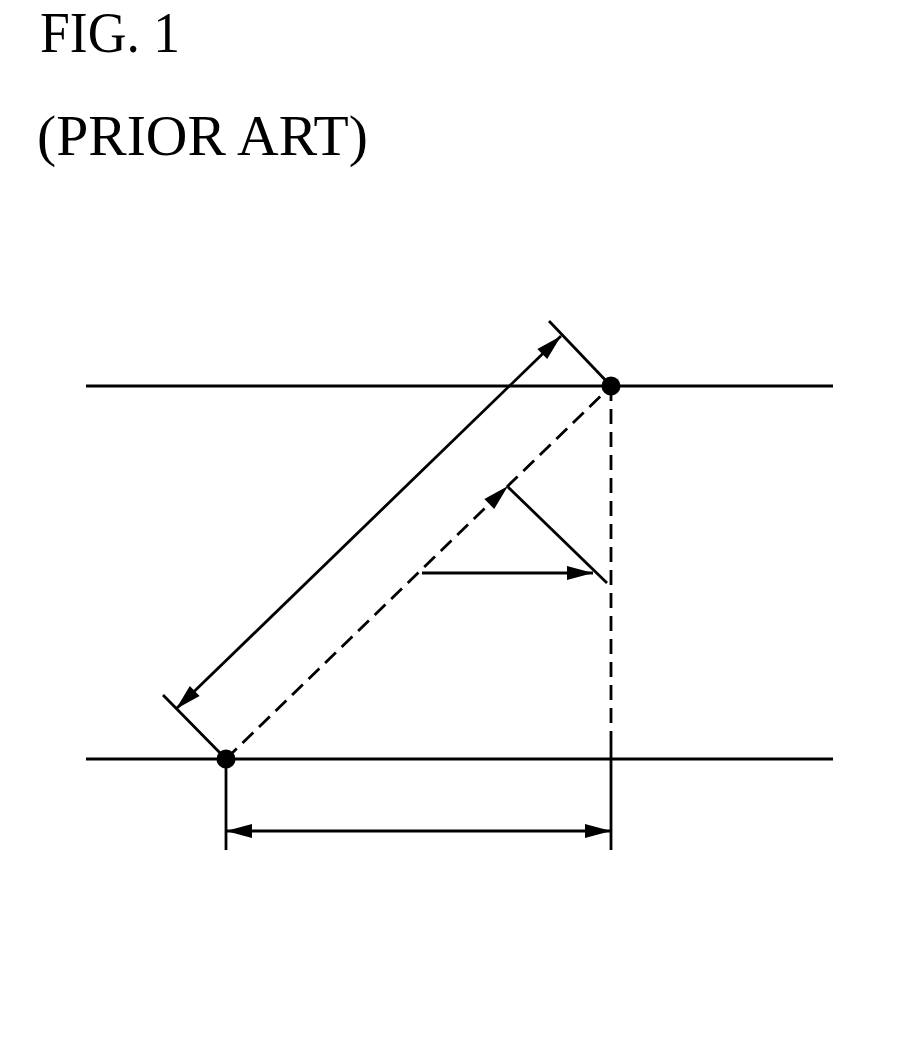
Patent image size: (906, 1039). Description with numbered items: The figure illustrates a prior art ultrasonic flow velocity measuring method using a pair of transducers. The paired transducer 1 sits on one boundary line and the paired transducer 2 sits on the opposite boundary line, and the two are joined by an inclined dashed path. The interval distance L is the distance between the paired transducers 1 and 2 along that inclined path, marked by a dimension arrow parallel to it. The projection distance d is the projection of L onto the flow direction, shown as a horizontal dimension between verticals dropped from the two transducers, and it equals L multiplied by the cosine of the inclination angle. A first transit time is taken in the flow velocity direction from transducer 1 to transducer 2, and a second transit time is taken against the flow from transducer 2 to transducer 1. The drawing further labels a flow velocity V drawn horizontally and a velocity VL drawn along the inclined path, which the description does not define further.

The paired transducer 1 is at (222, 768).
The paired transducer 2 is at (611, 386).
The interval distance L is at (368, 522).
The vehicle velocity vector along path VL is at (418, 572).
The lateral velocity component V is at (514, 565).
The projection distance d is at (418, 805).